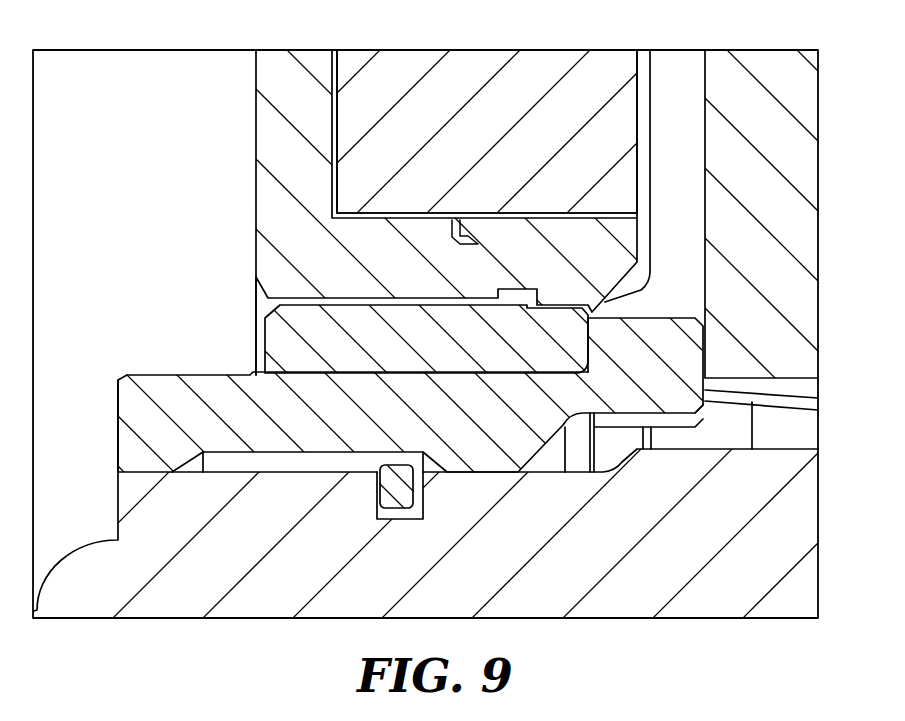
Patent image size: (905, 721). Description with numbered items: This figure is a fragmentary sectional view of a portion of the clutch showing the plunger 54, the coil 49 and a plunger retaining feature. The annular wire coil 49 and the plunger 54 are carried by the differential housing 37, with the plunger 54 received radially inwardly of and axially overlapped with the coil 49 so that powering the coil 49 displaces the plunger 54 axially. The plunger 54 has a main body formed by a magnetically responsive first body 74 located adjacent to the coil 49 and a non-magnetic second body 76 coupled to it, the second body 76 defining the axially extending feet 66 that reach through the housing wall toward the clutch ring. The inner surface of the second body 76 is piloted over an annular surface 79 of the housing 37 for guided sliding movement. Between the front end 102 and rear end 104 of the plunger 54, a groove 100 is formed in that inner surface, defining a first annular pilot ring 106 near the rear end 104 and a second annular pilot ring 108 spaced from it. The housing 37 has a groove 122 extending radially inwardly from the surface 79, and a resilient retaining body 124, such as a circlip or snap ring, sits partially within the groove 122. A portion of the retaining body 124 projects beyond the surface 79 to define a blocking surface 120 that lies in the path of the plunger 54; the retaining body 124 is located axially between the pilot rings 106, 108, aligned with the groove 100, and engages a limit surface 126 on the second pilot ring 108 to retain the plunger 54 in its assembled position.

The housing 37 is at (188, 105).
The annular wire coil 49 is at (598, 90).
The plunger 54 is at (210, 304).
The feet 66 is at (673, 346).
The first body 74 is at (283, 334).
The second body 76 is at (147, 420).
The surface of the differential housing 79 is at (257, 473).
The groove 100 is at (302, 453).
The front end 102 is at (706, 362).
The rear end 104 is at (118, 402).
The first annular pilot ring 106 is at (148, 455).
The second annular pilot ring 108 is at (482, 455).
The blocking surface 120 is at (417, 481).
The groove 122 is at (403, 503).
The retaining body 124 is at (390, 499).
The limit surface 126 is at (445, 470).